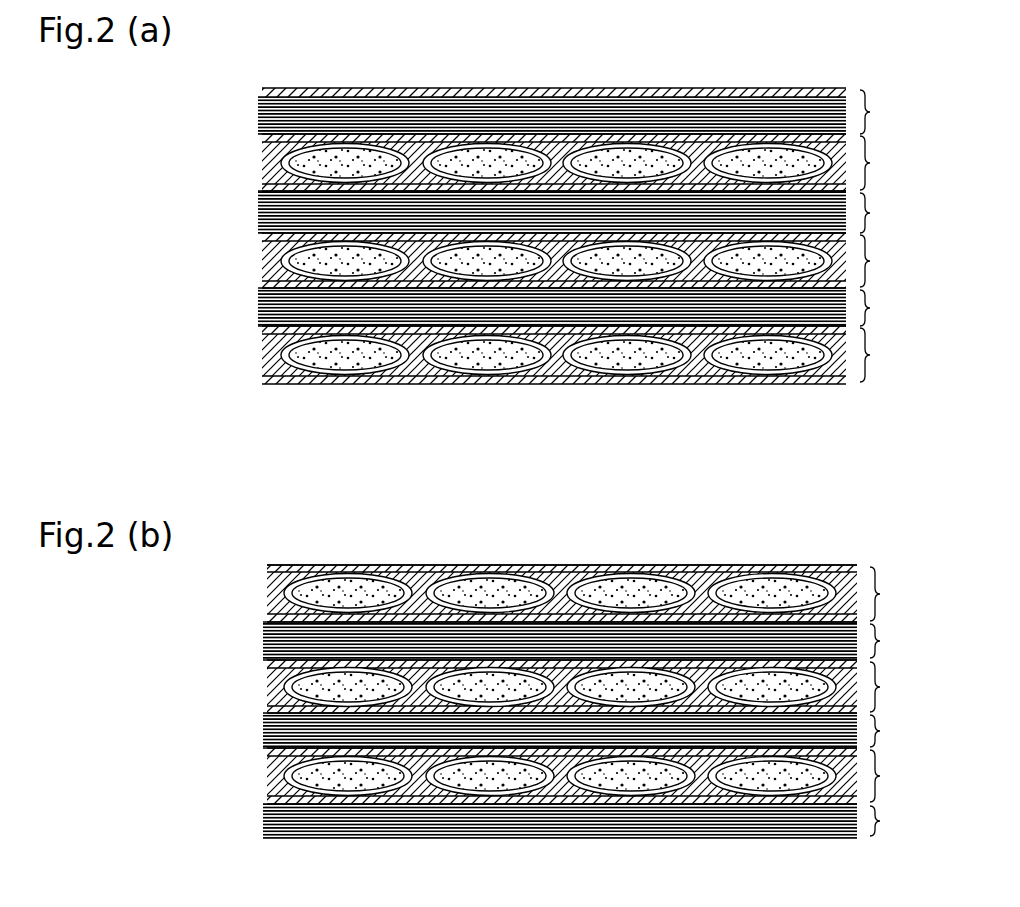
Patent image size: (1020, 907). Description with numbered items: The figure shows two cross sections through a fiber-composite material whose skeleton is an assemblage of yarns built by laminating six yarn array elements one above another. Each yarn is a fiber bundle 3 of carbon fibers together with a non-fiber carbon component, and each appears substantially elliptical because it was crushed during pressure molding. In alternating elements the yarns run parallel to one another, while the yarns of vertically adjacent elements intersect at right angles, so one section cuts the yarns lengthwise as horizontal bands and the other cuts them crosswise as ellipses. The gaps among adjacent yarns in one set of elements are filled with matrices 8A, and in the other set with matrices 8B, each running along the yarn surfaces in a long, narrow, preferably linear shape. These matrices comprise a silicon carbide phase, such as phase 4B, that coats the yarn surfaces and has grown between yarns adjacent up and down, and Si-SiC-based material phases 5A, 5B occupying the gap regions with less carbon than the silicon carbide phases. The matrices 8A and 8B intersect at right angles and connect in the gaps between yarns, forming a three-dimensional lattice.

The fiber bundle 3 is at (478, 150).
The silicon carbide phase 4B is at (275, 247).
The Si-SiC-based material phase 5A is at (425, 575).
The Si-SiC-based material phase 5B is at (416, 148).
The matrix 8A is at (548, 574).
The matrix 8B is at (565, 136).